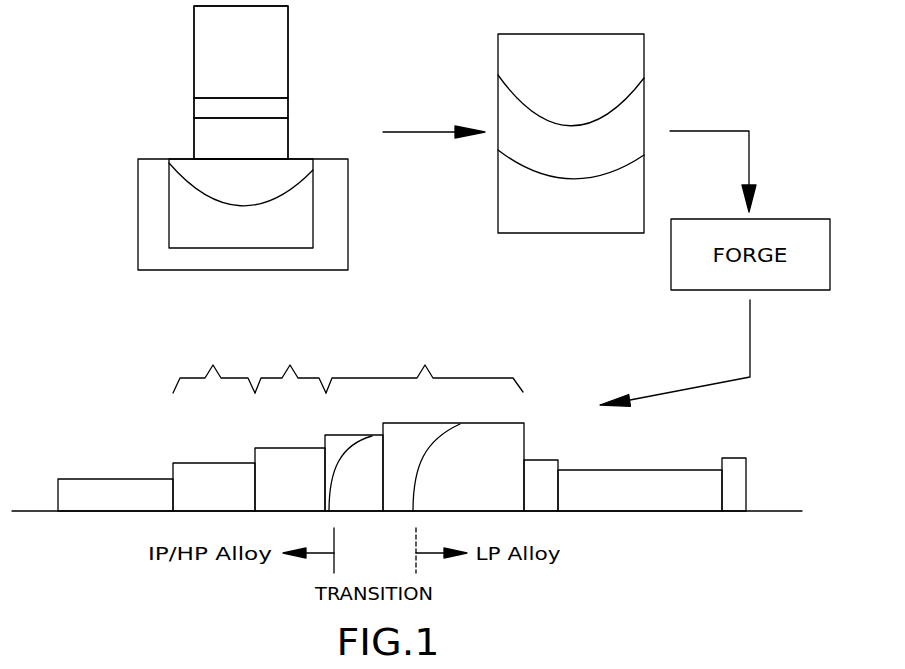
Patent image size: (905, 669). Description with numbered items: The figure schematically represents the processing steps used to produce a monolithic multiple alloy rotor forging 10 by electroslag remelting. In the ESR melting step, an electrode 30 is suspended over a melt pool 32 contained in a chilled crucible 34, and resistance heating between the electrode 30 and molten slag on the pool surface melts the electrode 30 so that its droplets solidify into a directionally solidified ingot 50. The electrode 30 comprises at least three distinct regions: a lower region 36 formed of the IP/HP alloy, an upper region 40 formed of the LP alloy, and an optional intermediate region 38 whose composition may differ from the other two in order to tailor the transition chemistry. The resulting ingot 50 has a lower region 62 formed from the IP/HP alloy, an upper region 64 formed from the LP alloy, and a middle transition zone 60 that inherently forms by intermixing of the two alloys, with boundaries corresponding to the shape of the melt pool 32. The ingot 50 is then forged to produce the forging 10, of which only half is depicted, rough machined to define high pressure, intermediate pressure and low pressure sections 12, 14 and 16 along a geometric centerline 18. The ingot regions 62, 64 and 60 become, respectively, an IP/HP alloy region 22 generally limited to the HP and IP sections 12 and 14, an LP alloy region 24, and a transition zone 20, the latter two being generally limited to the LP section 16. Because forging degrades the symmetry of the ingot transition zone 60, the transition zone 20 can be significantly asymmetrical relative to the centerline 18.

The rotor forging 10 is at (390, 420).
The high pressure section 12 is at (214, 422).
The intermediate pressure section 14 is at (290, 422).
The low pressure section 16 is at (424, 421).
The geometric centerline 18 is at (773, 510).
The transition zone 20 is at (408, 440).
The IP/HP alloy region 22 is at (133, 487).
The LP alloy region 24 is at (503, 437).
The electrode 30 is at (246, 79).
The melt pool 32 is at (300, 167).
The chilled crucible 34 is at (337, 222).
The lower electrode region 36 is at (210, 136).
The intermediate electrode region 38 is at (202, 105).
The upper electrode region 40 is at (202, 32).
The ingot 50 is at (589, 137).
The ingot transition zone 60 is at (500, 150).
The lower ingot region 62 is at (620, 183).
The upper ingot region 64 is at (510, 52).